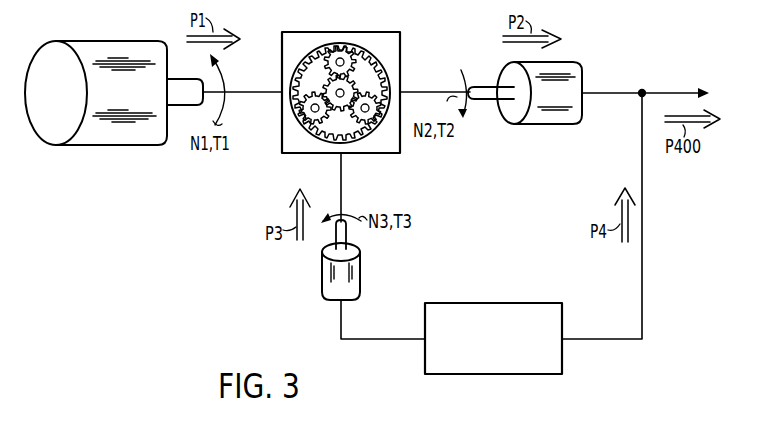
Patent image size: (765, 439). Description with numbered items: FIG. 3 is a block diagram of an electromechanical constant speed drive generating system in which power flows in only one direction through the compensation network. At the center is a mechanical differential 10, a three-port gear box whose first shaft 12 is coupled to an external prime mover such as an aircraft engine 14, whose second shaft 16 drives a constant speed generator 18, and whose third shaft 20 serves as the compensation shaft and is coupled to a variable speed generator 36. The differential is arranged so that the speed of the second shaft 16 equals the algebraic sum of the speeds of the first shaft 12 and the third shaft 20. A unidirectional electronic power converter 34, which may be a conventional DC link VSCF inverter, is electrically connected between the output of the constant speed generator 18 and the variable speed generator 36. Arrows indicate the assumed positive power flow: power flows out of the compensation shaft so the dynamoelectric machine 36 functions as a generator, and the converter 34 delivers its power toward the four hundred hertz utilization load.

The aircraft engine 14 is at (110, 40).
The first shaft 12 is at (258, 90).
The mechanical differential 10 is at (389, 155).
The second shaft 16 is at (428, 91).
The constant speed generator 18 is at (587, 53).
The third shaft 20 is at (343, 196).
The variable speed generator 36 is at (362, 278).
The unidirectional electronic power converter 34 is at (477, 303).